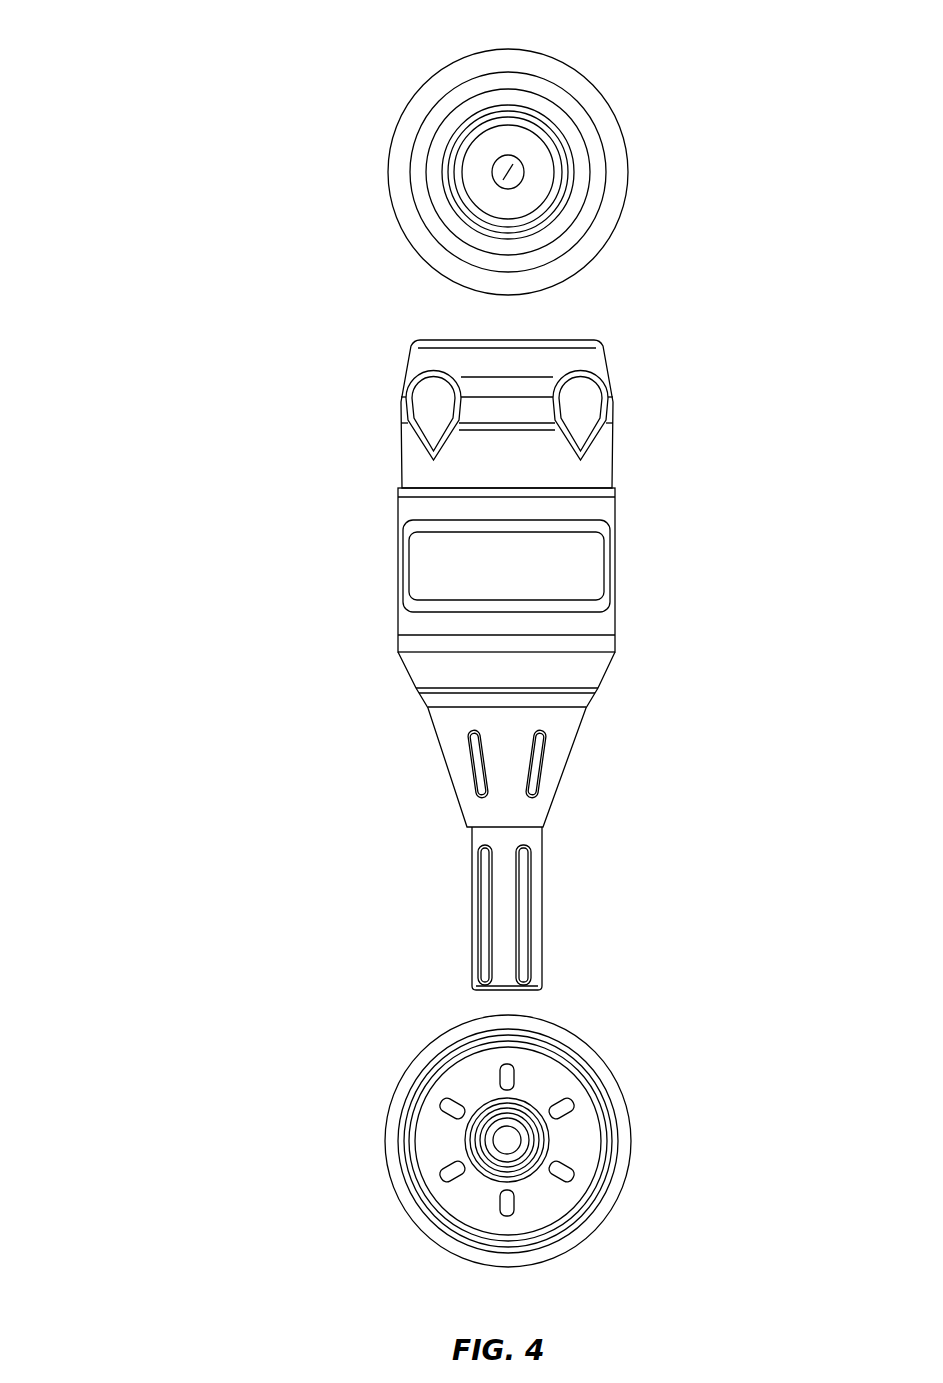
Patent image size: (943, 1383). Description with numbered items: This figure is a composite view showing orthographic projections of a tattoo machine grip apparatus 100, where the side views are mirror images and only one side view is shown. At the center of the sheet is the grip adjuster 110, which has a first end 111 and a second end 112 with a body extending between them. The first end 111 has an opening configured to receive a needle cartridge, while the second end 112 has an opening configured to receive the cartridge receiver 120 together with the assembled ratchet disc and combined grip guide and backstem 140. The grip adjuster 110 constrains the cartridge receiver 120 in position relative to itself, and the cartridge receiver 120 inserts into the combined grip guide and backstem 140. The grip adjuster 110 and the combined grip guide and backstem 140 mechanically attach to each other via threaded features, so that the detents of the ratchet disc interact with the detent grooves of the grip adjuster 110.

The tattoo machine grip apparatus 100 is at (68, 26).
The cartridge receiver 120 is at (462, 209).
The first end 111 is at (556, 330).
The grip adjuster 110 is at (382, 551).
The second end 112 is at (582, 695).
The combined grip guide and backstem 140 is at (555, 834).